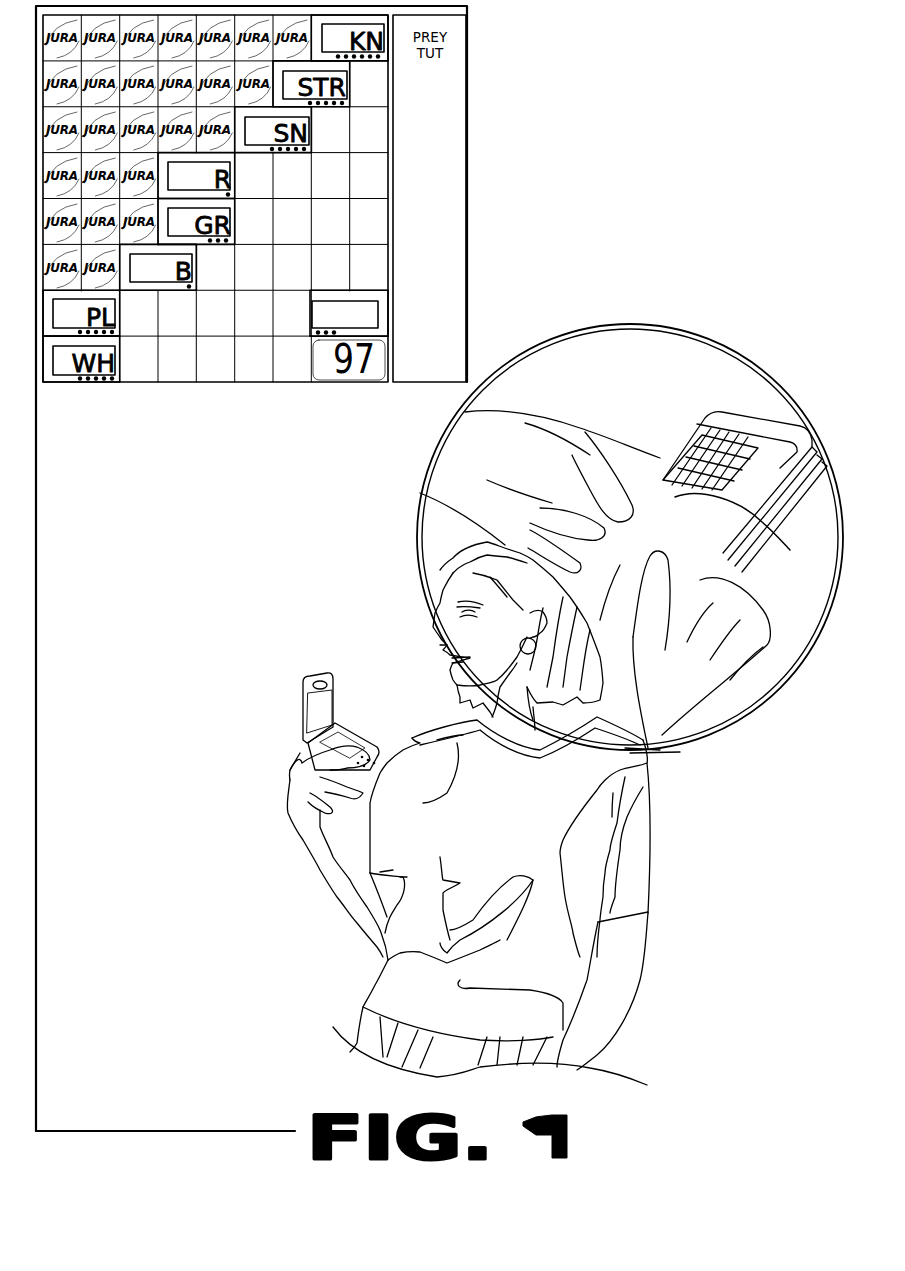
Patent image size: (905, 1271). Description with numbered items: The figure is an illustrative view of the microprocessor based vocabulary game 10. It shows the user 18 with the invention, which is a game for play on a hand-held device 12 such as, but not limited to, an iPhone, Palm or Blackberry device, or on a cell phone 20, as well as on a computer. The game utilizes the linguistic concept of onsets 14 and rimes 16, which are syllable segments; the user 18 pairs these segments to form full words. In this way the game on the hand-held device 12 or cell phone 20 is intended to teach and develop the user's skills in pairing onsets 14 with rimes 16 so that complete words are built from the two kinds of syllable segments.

The microprocessor based vocabulary game 10 is at (723, 122).
The hand-held device 12 is at (630, 537).
The onsets 14 is at (118, 315).
The rimes 16 is at (309, 316).
The user 18 is at (410, 975).
The cell phone 20 is at (328, 710).